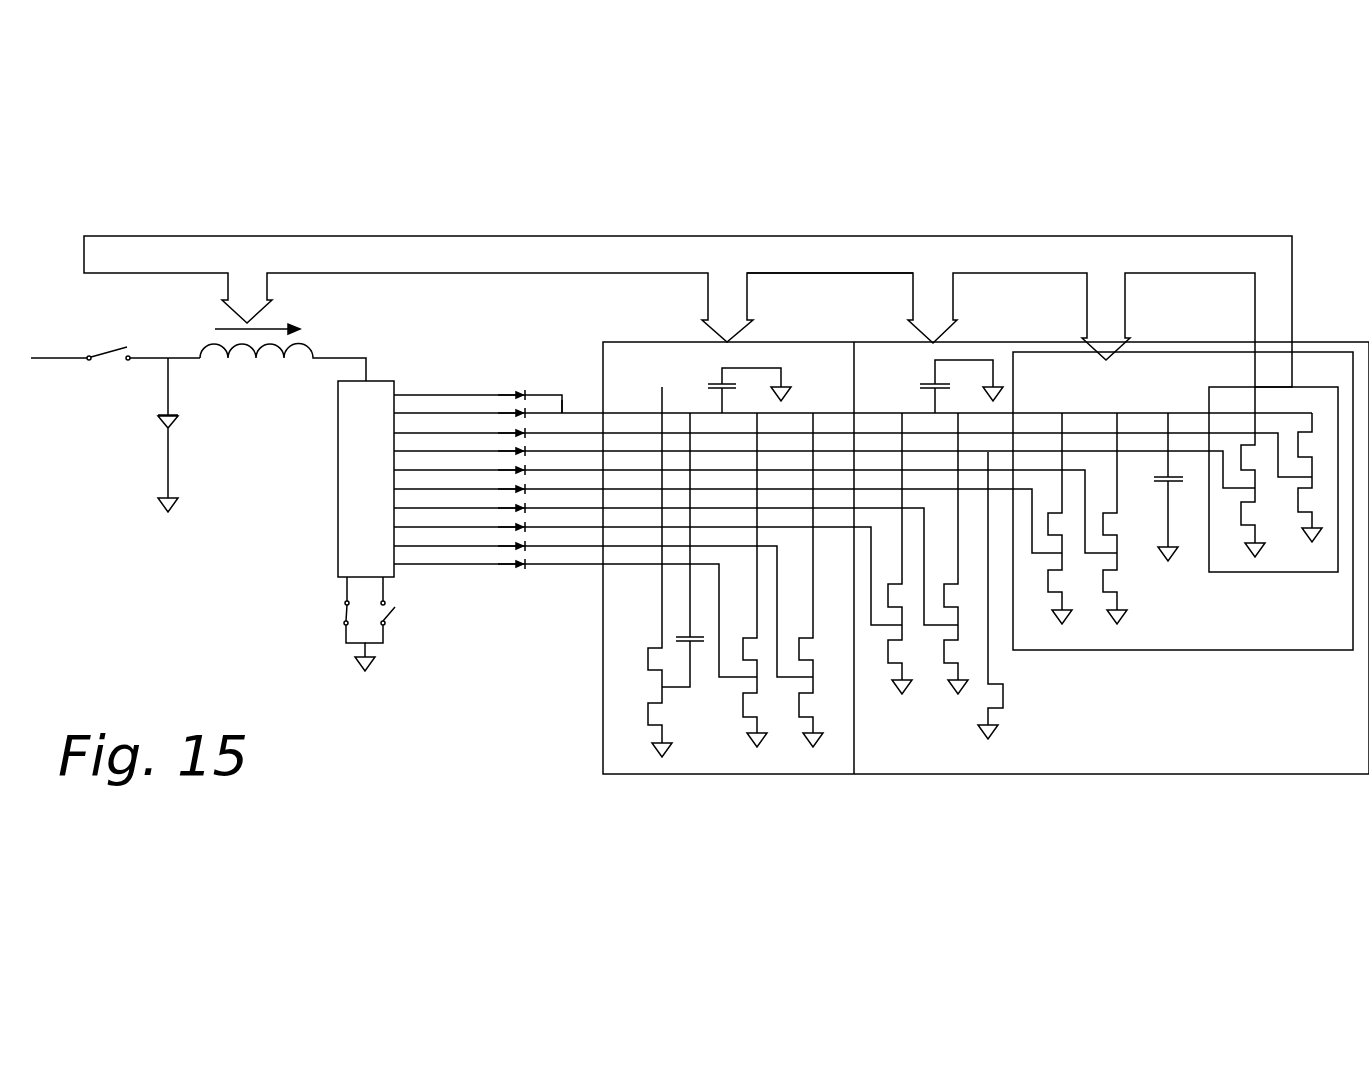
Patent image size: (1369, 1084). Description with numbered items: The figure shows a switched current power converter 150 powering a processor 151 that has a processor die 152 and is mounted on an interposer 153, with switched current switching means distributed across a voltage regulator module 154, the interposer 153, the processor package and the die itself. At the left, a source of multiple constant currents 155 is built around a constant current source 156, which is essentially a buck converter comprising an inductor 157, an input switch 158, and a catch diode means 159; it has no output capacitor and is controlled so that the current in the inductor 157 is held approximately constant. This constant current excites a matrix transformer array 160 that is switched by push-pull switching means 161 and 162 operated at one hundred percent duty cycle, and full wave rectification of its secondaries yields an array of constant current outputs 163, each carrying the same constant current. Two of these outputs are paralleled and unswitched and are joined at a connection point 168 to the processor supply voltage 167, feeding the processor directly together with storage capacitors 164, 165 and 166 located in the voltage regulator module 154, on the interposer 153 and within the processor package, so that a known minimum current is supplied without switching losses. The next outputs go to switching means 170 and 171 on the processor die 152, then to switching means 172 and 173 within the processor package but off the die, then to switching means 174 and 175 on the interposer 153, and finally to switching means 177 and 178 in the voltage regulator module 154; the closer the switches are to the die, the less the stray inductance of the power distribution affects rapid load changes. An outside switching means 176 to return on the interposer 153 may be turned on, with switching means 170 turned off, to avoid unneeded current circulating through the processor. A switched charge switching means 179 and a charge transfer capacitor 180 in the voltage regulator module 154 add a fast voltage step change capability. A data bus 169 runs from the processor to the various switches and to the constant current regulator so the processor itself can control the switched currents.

The switched current power converter 150 is at (385, 302).
The processor 151 is at (1198, 632).
The processor die 152 is at (1275, 553).
The interposer 153 is at (1333, 783).
The voltage regulator module (VRM Pod) 154 is at (730, 772).
The source of multiple constant currents 155 is at (203, 553).
The constant current source 156 is at (113, 411).
The inductor 157 is at (200, 330).
The input voltage Vi 158 is at (103, 345).
The catch diode means 159 is at (157, 420).
The matrix transformer array 160 is at (344, 480).
The push-pull switching means 161 is at (345, 623).
The push-pull switching means 162 is at (395, 625).
The constant current outputs 163 is at (458, 387).
The storage capacitor 164 is at (696, 360).
The storage capacitor 165 is at (955, 348).
The storage capacitor 166 is at (1153, 465).
The Vcc supply 167 is at (1068, 400).
The connection point 168 is at (562, 387).
The data bus 169 is at (850, 222).
The switching means 170 is at (1233, 450).
The switching means 171 is at (1323, 450).
The switching means 172 is at (1078, 573).
The switching means 173 is at (1127, 585).
The switching means 174 is at (917, 657).
The switching means 175 is at (970, 640).
The outside switching means 176 is at (1015, 725).
The switching means 177 is at (763, 705).
The switching means 178 is at (820, 687).
The switched charge switching means 179 is at (640, 686).
The charge transfer capacitor 180 is at (675, 625).